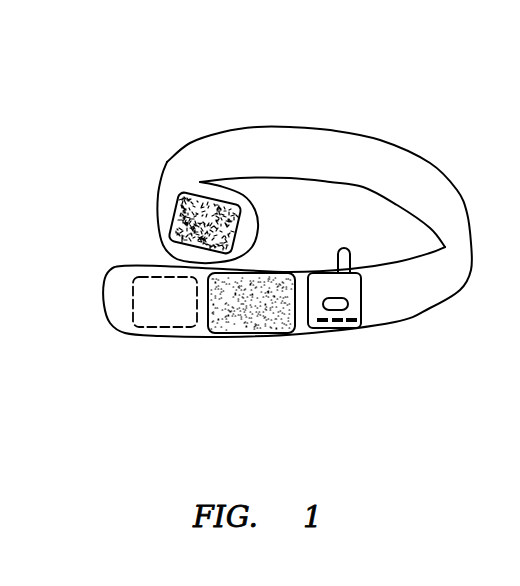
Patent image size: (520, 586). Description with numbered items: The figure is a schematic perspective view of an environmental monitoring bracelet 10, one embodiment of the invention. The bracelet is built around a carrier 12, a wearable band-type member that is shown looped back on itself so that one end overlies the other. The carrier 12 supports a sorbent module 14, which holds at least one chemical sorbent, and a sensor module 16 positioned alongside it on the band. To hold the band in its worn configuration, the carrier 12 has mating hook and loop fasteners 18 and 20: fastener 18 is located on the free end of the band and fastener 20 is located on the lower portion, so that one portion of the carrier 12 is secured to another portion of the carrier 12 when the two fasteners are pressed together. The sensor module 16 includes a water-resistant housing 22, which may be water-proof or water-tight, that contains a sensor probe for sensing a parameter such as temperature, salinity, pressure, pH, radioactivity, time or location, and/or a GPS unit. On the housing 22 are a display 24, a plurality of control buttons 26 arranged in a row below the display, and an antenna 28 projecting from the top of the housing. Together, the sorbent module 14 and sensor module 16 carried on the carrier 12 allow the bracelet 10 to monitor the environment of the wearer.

The environmental monitoring bracelet 10 is at (367, 44).
The carrier 12 is at (378, 146).
The sorbent module 14 is at (233, 344).
The sensor module 16 is at (334, 345).
The hook and loop fastener 18 is at (161, 218).
The hook and loop fastener 20 is at (124, 283).
The water-resistant housing 22 is at (313, 310).
The display 24 is at (358, 293).
The control buttons 26 is at (373, 320).
The antenna 28 is at (343, 248).